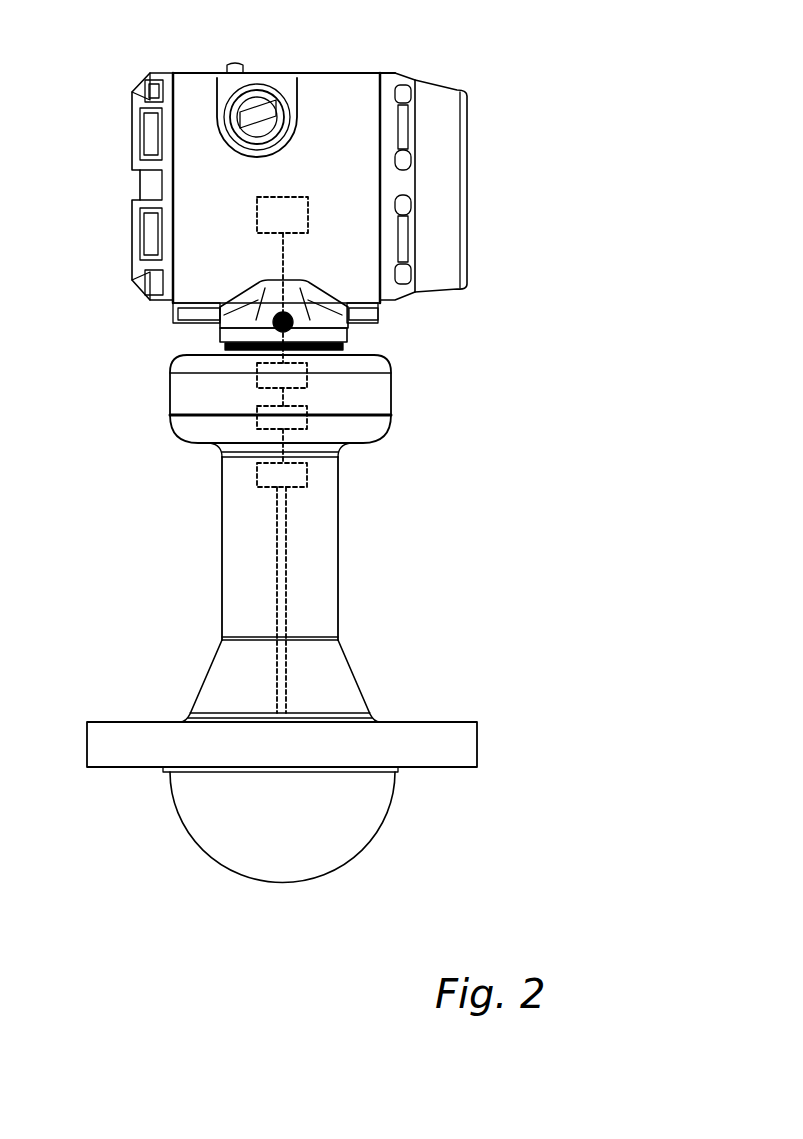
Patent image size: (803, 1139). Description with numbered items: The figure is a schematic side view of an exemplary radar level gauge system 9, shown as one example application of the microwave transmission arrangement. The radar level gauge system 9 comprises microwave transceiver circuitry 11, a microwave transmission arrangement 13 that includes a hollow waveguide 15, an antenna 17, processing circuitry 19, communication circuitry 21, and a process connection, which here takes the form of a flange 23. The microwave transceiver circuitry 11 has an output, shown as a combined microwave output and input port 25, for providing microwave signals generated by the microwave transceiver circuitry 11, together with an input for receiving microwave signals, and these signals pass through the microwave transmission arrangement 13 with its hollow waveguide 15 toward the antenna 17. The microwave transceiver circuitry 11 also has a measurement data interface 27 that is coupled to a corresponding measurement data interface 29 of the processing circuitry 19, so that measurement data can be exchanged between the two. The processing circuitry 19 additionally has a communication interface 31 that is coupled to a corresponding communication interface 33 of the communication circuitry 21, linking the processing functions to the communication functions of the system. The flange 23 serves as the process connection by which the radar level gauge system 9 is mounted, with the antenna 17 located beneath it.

The radar level gauge system 9 is at (518, 78).
The communication circuitry 21 is at (257, 217).
The communication interface 33 is at (282, 233).
The communication interface 31 is at (287, 362).
The processing circuitry 19 is at (257, 375).
The measurement data interface 27 is at (283, 403).
The microwave transceiver circuitry 11 is at (307, 423).
The combined microwave output and input port 25 is at (283, 432).
The measurement data interface 29 is at (257, 422).
The microwave transmission arrangement 13 is at (320, 482).
The hollow waveguide 15 is at (287, 605).
The flange 23 is at (483, 713).
The antenna 17 is at (195, 842).